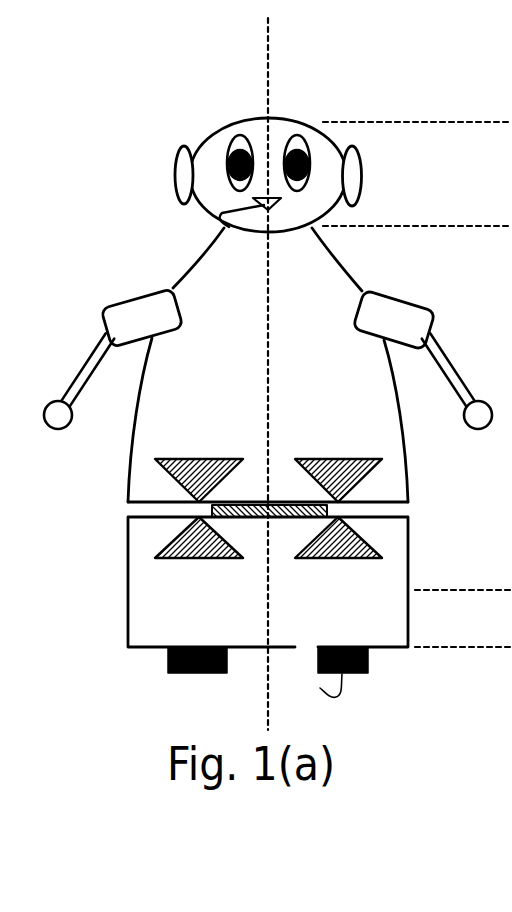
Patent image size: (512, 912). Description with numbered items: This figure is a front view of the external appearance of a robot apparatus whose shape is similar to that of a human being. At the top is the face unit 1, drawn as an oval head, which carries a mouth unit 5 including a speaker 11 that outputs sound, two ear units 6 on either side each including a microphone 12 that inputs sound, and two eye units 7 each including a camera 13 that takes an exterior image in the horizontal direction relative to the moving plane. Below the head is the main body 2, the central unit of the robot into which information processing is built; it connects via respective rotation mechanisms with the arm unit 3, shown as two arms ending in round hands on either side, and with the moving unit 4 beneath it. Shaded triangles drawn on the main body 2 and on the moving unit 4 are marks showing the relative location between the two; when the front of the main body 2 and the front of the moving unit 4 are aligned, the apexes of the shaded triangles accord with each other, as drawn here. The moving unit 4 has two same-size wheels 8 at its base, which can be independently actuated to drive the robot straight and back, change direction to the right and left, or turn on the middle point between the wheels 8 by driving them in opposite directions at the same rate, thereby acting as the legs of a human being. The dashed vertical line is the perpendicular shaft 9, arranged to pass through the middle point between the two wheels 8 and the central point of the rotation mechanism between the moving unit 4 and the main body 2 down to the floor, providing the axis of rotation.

The face unit 1 is at (205, 137).
The main body 2 is at (355, 292).
The arm unit 3 is at (75, 367).
The moving unit 4 is at (410, 547).
The mouth unit 5 is at (195, 223).
The speaker 11 is at (220, 227).
The ear unit 6 is at (277, 174).
The microphone 12 is at (176, 175).
The eye unit 7 is at (278, 132).
The camera 13 is at (251, 143).
The wheel 8 is at (195, 674).
The perpendicular shaft 9 is at (270, 50).